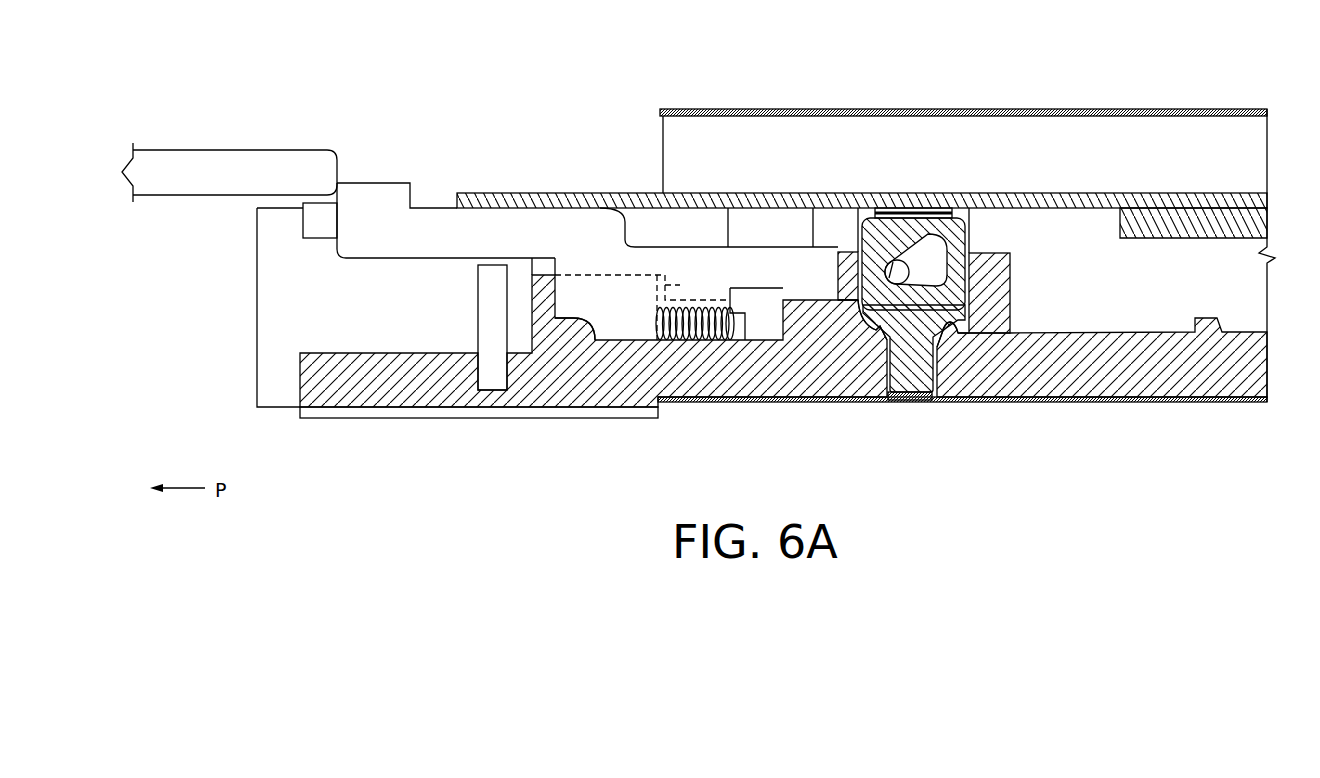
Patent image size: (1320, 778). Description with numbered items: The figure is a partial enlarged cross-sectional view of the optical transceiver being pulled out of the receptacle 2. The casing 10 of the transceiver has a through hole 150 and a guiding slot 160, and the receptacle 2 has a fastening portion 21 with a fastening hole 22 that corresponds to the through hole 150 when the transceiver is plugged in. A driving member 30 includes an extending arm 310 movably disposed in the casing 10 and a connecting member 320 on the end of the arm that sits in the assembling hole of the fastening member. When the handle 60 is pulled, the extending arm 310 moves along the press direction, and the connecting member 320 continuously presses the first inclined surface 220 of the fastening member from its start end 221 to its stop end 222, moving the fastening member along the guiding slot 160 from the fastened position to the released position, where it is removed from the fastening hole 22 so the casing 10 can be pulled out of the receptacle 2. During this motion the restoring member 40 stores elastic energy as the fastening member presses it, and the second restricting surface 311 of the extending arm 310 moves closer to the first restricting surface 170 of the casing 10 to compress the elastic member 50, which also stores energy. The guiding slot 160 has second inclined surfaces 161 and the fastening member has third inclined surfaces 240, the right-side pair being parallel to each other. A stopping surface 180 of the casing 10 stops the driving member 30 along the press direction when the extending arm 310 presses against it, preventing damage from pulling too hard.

The receptacle 2 is at (935, 228).
The casing 10 is at (655, 128).
The fastening portion 21 is at (886, 412).
The fastening hole 22 is at (900, 399).
The driving member 30 is at (433, 197).
The restoring member 40 is at (879, 196).
The elastic member 50 is at (707, 300).
The handle 60 is at (177, 165).
The through hole 150 is at (930, 393).
The guiding slot 160 is at (978, 260).
The second inclined surface 161 is at (880, 330).
The first restricting surface 170 is at (678, 285).
The stopping surface 180 is at (592, 342).
The first inclined surface 220 is at (920, 166).
The start end 221 is at (968, 256).
The stop end 222 is at (852, 252).
The third inclined surface 240 is at (850, 323).
The extending arm 310 is at (573, 220).
The second restricting surface 311 is at (740, 320).
The connecting member 320 is at (886, 270).